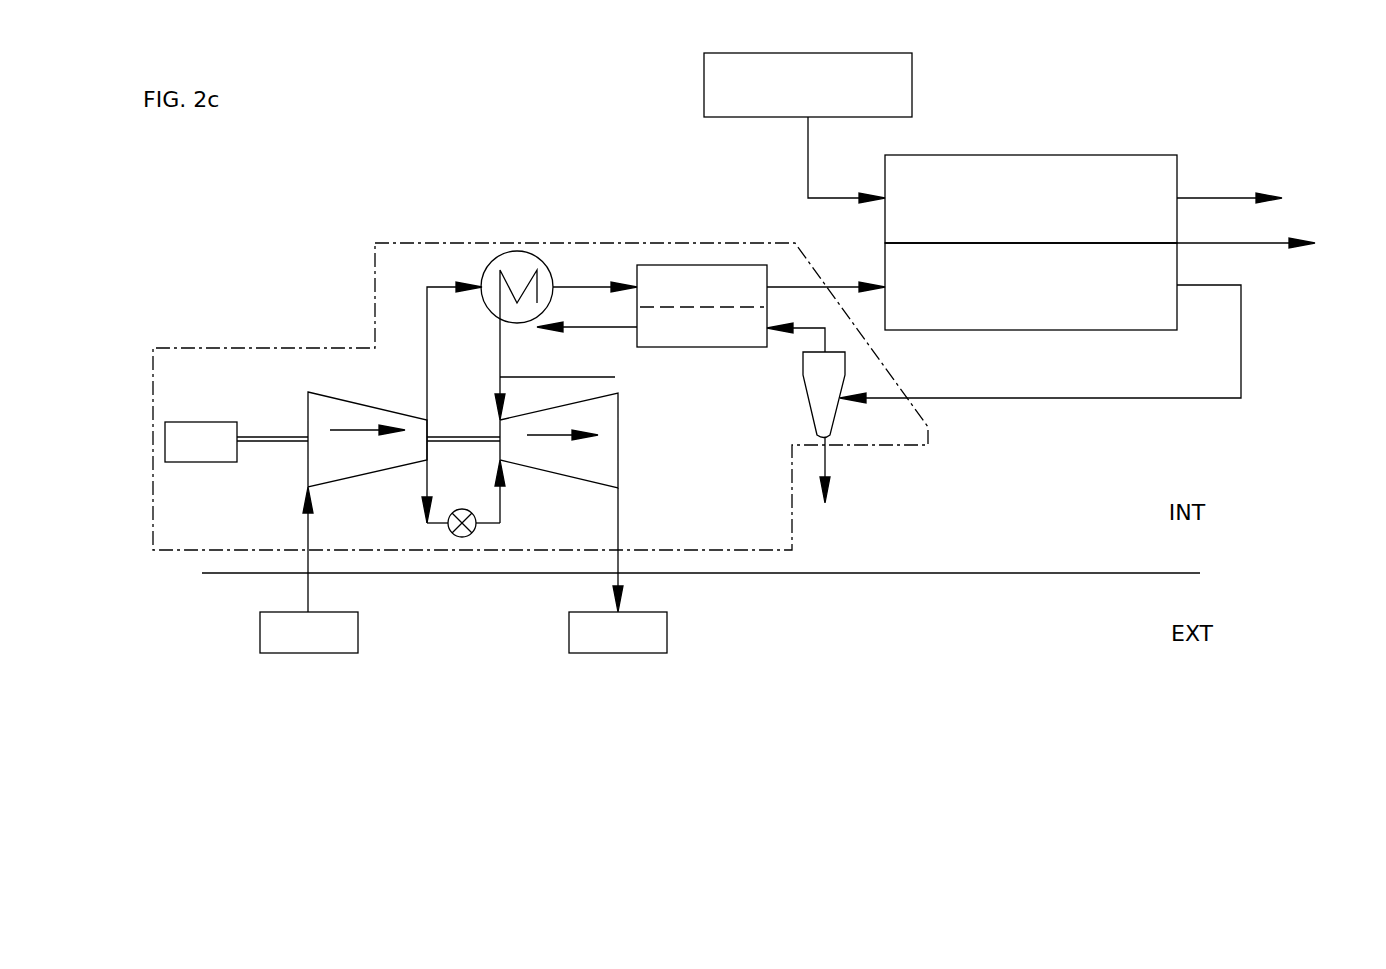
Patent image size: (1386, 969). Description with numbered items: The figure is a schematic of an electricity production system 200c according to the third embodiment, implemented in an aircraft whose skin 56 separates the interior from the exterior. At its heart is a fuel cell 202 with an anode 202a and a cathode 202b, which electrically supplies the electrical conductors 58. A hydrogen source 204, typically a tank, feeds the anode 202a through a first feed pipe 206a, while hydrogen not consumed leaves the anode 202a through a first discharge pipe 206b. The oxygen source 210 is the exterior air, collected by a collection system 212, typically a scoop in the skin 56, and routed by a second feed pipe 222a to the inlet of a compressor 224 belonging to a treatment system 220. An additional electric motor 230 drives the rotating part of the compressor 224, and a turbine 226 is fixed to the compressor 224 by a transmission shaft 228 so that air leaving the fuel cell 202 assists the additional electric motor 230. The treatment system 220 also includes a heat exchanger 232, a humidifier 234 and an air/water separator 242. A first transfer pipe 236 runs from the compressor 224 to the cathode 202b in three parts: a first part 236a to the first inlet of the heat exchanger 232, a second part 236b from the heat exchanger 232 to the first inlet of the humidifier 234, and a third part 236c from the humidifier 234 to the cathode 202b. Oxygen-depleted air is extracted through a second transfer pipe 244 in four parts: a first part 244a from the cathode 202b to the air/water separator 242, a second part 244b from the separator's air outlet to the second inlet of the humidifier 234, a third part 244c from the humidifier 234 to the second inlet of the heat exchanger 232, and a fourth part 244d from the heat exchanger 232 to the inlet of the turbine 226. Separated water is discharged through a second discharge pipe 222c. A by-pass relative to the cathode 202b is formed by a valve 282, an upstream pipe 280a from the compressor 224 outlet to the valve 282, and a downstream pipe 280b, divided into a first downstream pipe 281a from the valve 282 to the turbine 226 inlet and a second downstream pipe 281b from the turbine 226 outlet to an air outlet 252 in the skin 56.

The electricity production system 200c is at (1055, 126).
The fuel cell 202 is at (1178, 131).
The anode 202a is at (1031, 199).
The cathode 202b is at (1031, 286).
The hydrogen source 204 is at (808, 85).
The first feed pipe 206a is at (808, 143).
The first discharge pipe 206b is at (1240, 198).
The electrical conductors 58 is at (1265, 243).
The oxygen source 210 is at (701, 591).
The collection system 212 is at (309, 632).
The treatment system 220 is at (385, 243).
The second feed pipe 222a is at (307, 593).
The second discharge pipe 222c is at (826, 460).
The compressor 224 is at (367, 439).
The turbine 226 is at (559, 440).
The transmission shaft 228 is at (455, 437).
The additional electric motor 230 is at (201, 442).
The heat exchanger 232 is at (512, 252).
The humidifier 234 is at (702, 306).
The first transfer pipe 236 is at (278, 265).
The first part of first transfer pipe 236a is at (427, 300).
The second part of first transfer pipe 236b is at (579, 285).
The third part of first transfer pipe 236c is at (790, 285).
The air/water separator 242 is at (818, 402).
The second transfer pipe 244 is at (1205, 411).
The first part of second transfer pipe 244a is at (1242, 342).
The second part of second transfer pipe 244b is at (825, 340).
The third part of second transfer pipe 244c is at (605, 327).
The fourth part of second transfer pipe 244d is at (615, 377).
The air outlet 252 is at (618, 632).
The upstream pipe 280a is at (427, 478).
The downstream pipe 280b is at (642, 512).
The first downstream pipe 281a is at (505, 527).
The second downstream pipe 281b is at (618, 563).
The valve 282 is at (462, 538).
The skin 56 is at (1190, 573).